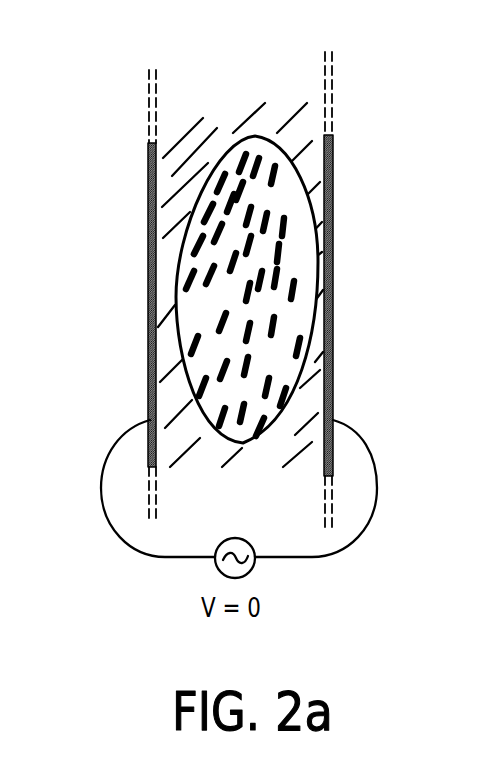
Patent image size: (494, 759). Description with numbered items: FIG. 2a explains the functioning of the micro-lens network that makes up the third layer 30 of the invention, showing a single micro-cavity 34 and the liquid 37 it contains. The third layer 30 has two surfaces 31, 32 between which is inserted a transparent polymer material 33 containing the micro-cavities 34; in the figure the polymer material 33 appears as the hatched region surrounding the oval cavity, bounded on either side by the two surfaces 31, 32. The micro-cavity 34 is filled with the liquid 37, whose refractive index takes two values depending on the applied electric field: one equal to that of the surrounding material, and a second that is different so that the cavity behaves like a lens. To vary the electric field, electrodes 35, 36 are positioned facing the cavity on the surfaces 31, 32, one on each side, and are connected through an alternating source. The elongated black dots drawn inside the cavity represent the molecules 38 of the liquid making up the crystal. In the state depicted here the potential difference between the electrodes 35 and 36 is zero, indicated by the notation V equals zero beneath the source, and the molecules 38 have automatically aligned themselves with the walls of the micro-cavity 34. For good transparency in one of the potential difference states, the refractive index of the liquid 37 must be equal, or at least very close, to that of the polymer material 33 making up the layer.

The third layer 30 is at (271, 71).
The surface 31 is at (327, 95).
The surface 32 is at (153, 117).
The transparent polymer material 33 is at (183, 105).
The micro-cavity 34 is at (332, 256).
The electrode 35 is at (331, 403).
The electrode 36 is at (148, 376).
The liquid 37 is at (293, 316).
The molecules 38 is at (205, 283).